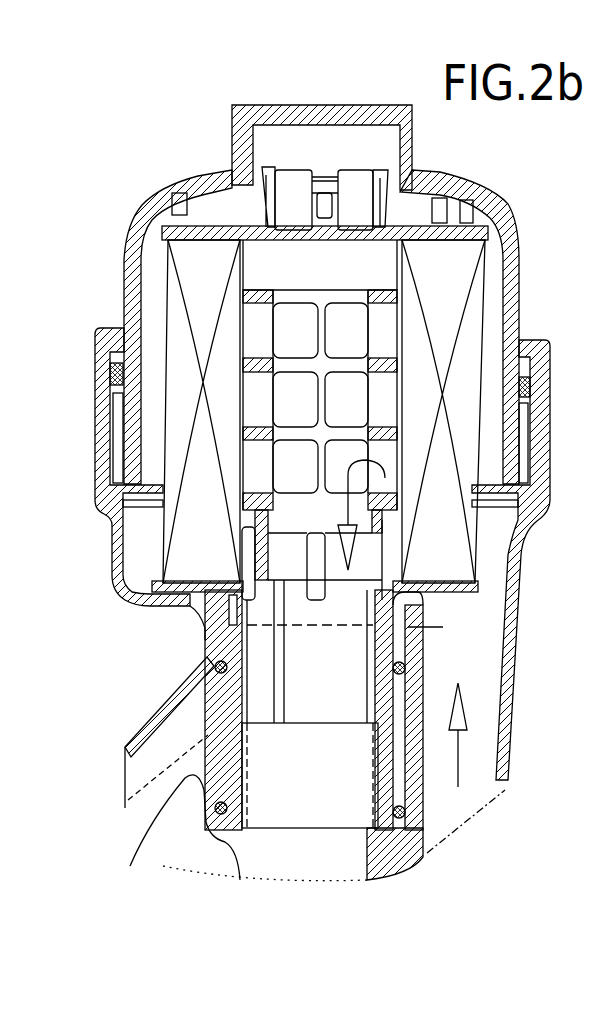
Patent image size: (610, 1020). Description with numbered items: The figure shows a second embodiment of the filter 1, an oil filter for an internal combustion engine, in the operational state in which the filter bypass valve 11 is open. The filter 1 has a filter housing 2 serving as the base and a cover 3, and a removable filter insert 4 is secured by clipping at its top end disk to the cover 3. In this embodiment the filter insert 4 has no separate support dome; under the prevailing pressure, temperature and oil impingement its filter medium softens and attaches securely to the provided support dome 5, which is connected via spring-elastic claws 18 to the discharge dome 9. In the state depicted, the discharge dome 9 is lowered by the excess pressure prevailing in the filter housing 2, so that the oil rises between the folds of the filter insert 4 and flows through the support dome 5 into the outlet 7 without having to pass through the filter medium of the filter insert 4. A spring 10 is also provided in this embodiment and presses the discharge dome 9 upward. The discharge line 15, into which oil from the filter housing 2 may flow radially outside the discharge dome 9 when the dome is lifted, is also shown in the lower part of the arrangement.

The filter 1 is at (541, 182).
The filter housing 2 is at (526, 513).
The cover 3 is at (465, 190).
The filter insert 4 is at (443, 307).
The support dome 5 is at (385, 376).
The outlet 7 is at (303, 862).
The discharge dome 9 is at (392, 761).
The spring 10 is at (152, 826).
The filter bypass valve 11 is at (187, 627).
The discharge line 15 is at (125, 780).
The spring-elastic claws 18 is at (380, 638).